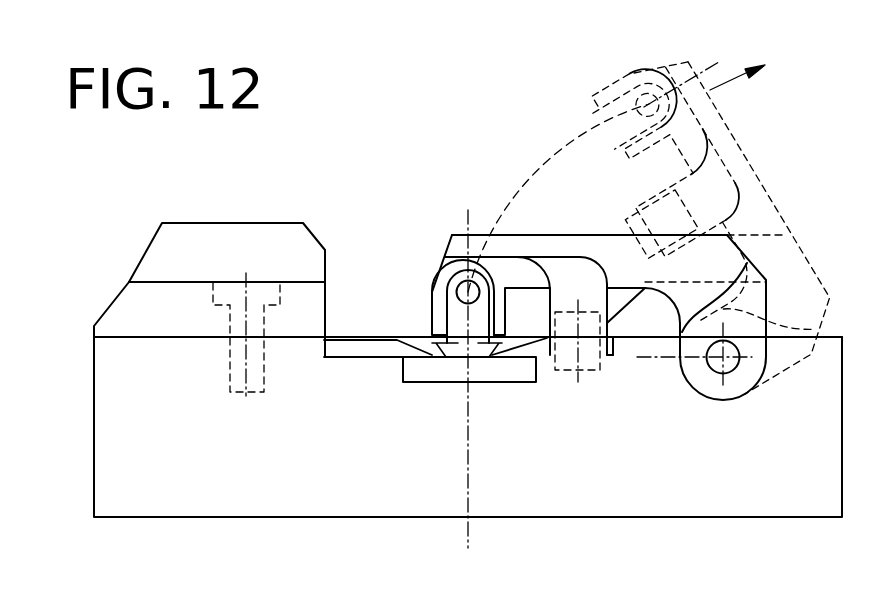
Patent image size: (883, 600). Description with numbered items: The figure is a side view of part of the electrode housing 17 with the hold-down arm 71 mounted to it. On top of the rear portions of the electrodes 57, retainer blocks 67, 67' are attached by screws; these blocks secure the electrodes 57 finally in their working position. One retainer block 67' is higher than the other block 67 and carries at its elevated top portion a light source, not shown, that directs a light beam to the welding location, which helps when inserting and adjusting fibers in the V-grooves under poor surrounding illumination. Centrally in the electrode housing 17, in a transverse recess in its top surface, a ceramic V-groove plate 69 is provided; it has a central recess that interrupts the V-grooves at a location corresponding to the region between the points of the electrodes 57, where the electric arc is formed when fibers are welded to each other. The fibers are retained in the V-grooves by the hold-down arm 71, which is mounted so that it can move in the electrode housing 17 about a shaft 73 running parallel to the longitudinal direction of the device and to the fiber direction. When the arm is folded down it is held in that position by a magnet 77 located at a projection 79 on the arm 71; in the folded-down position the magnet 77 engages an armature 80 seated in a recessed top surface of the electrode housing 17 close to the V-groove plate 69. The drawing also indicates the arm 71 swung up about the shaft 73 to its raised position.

The electrode housing 17 is at (205, 508).
The electrodes 57 is at (361, 347).
The retainer block 67 is at (673, 216).
The retainer block 67' is at (209, 281).
The ceramic V-groove plate 69 is at (505, 378).
The hold-down arm 71 is at (555, 250).
The shaft 73 is at (731, 370).
The magnet 77 is at (613, 338).
The projection 79 is at (584, 270).
The armature 80 is at (588, 366).